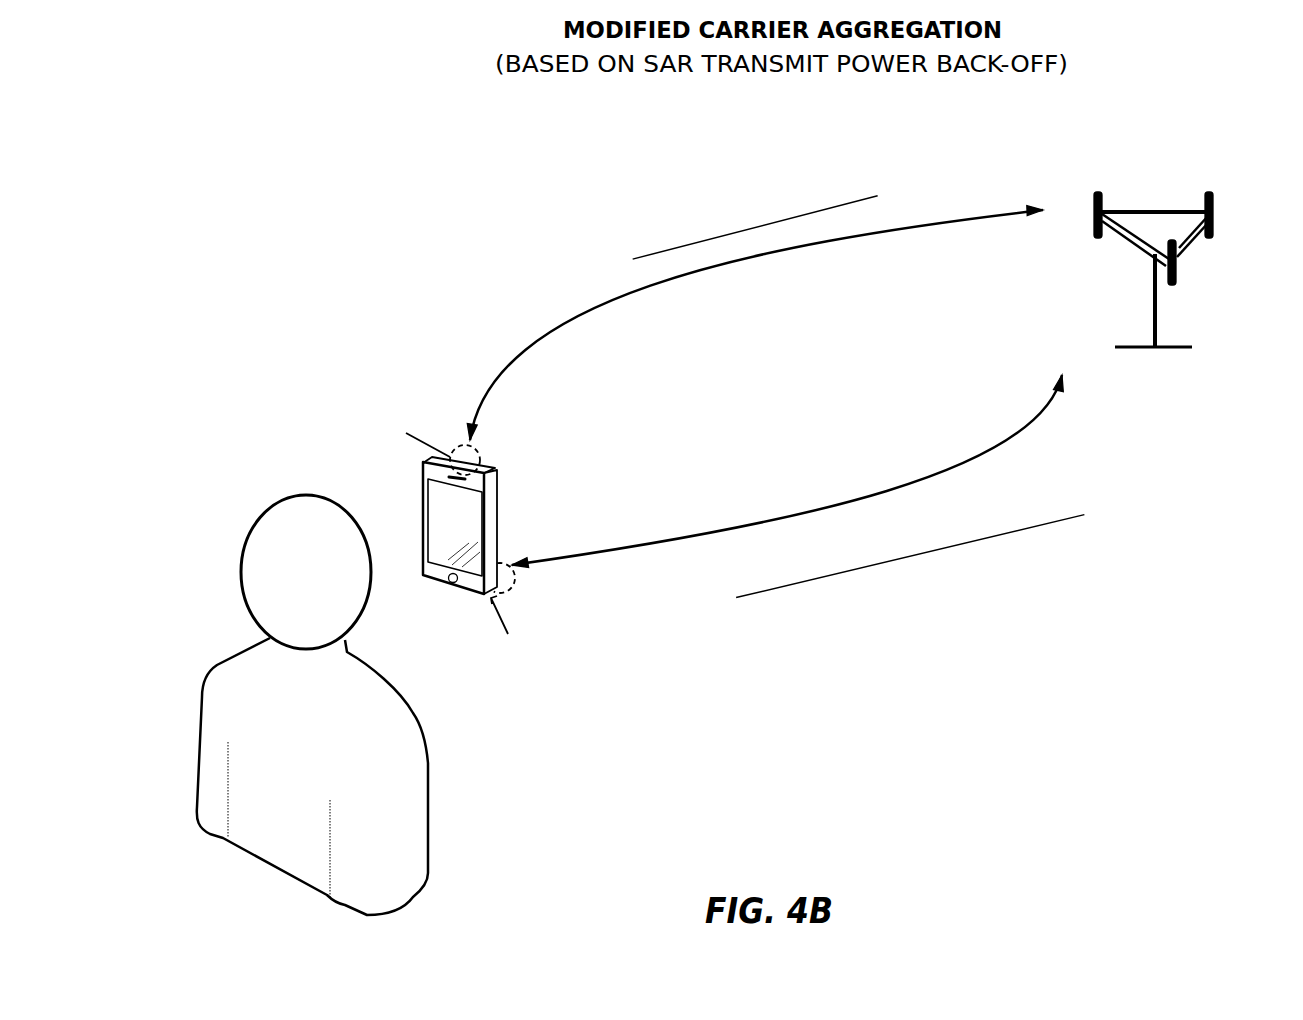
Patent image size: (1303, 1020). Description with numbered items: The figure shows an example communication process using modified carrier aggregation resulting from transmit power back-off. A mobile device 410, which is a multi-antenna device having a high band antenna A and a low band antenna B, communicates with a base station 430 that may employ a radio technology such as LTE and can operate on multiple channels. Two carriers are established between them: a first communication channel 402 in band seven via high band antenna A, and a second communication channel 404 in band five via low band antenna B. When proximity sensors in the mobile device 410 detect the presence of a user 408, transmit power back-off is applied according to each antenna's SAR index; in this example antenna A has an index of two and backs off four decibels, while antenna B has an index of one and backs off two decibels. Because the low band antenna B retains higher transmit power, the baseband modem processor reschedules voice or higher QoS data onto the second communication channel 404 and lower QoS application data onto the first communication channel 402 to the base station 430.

The first communication channel 402 is at (592, 313).
The second communication channel 404 is at (837, 507).
The user 408 is at (242, 648).
The mobile device 410 is at (497, 523).
The base station 430 is at (1152, 210).